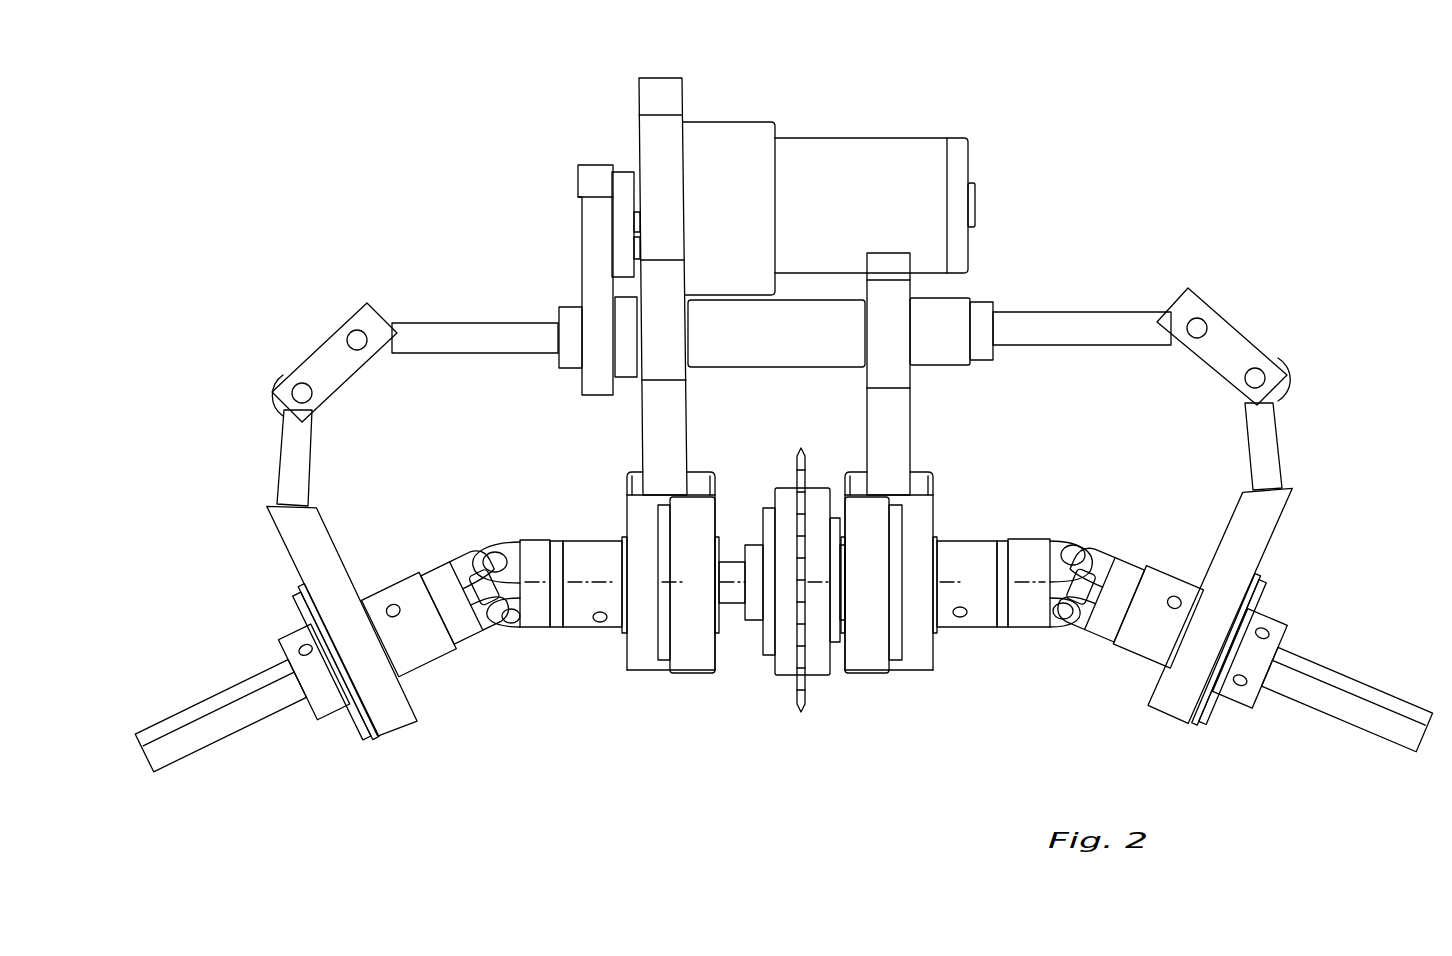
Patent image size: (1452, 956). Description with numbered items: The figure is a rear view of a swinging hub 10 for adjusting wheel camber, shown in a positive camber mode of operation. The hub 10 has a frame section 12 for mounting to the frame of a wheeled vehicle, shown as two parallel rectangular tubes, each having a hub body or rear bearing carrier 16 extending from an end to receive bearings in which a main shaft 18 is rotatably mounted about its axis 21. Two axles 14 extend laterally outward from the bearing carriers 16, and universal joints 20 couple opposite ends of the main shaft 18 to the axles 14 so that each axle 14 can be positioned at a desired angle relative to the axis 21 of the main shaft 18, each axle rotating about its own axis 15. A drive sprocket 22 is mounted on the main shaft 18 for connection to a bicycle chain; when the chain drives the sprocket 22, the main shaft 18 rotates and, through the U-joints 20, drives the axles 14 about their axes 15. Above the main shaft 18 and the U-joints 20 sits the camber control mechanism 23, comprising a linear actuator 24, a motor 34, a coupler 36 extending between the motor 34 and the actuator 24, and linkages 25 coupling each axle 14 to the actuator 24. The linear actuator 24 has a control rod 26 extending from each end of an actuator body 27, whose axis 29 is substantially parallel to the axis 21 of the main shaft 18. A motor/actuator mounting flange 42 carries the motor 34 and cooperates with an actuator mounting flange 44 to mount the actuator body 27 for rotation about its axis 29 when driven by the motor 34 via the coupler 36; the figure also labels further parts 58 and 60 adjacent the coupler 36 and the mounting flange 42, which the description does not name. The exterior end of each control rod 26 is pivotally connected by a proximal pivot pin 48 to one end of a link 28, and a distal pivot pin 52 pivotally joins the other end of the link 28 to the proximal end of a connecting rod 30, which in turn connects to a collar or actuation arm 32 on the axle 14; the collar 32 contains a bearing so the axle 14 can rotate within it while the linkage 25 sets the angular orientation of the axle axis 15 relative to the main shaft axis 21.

The swinging hub 10 is at (1066, 79).
The frame section 12 is at (706, 473).
The axle 14 is at (232, 736).
The axis of the axle 15 is at (92, 778).
The hub body or rear bearing carrier 16 is at (684, 670).
The main shaft 18 is at (738, 604).
The universal joint 20 is at (505, 658).
The axis of the main shaft 21 is at (222, 580).
The drive sprocket 22 is at (806, 692).
The camber control mechanism 23 is at (1002, 266).
The linear actuator 24 is at (776, 360).
The linkage 25 is at (788, 369).
The control rod 26 is at (428, 338).
The actuator body 27 is at (823, 352).
The link 28 is at (783, 334).
The axis of the actuator body 29 is at (250, 350).
The connecting rod 30 is at (287, 454).
The collar or actuation arm 32 is at (406, 728).
The motor 34 is at (830, 148).
The coupler 36 is at (582, 232).
The motor/actuator mounting flange 42 is at (657, 86).
The actuator mounting flange 44 is at (890, 265).
The proximal pivot pin 48 is at (360, 336).
The distal pivot pin 52 is at (312, 396).
The bearing 58 is at (622, 178).
The hub 60 is at (622, 372).